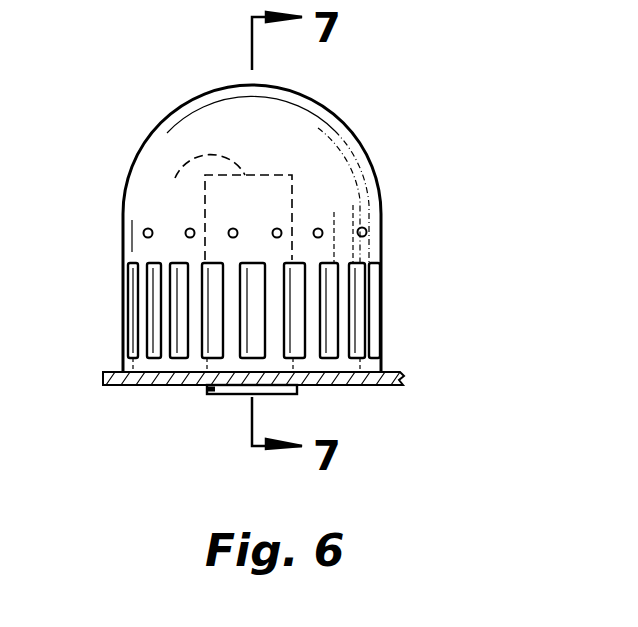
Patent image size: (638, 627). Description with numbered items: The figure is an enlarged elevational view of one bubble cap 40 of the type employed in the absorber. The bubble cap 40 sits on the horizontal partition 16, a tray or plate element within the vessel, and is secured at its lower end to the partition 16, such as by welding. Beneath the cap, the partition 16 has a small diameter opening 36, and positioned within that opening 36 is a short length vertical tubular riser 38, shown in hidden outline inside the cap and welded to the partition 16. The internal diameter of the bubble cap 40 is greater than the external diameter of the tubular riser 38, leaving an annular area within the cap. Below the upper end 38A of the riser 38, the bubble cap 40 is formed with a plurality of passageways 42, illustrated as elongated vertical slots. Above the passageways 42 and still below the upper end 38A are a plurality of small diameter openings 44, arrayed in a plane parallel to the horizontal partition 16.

The horizontal partition 16 is at (108, 373).
The small diameter opening 36 is at (226, 394).
The short length vertical tubular riser 38 is at (293, 191).
The upper end of tubular riser 38A is at (196, 181).
The bubble cap 40 is at (362, 143).
The passageways 42 is at (176, 305).
The small diameter openings 44 is at (321, 236).